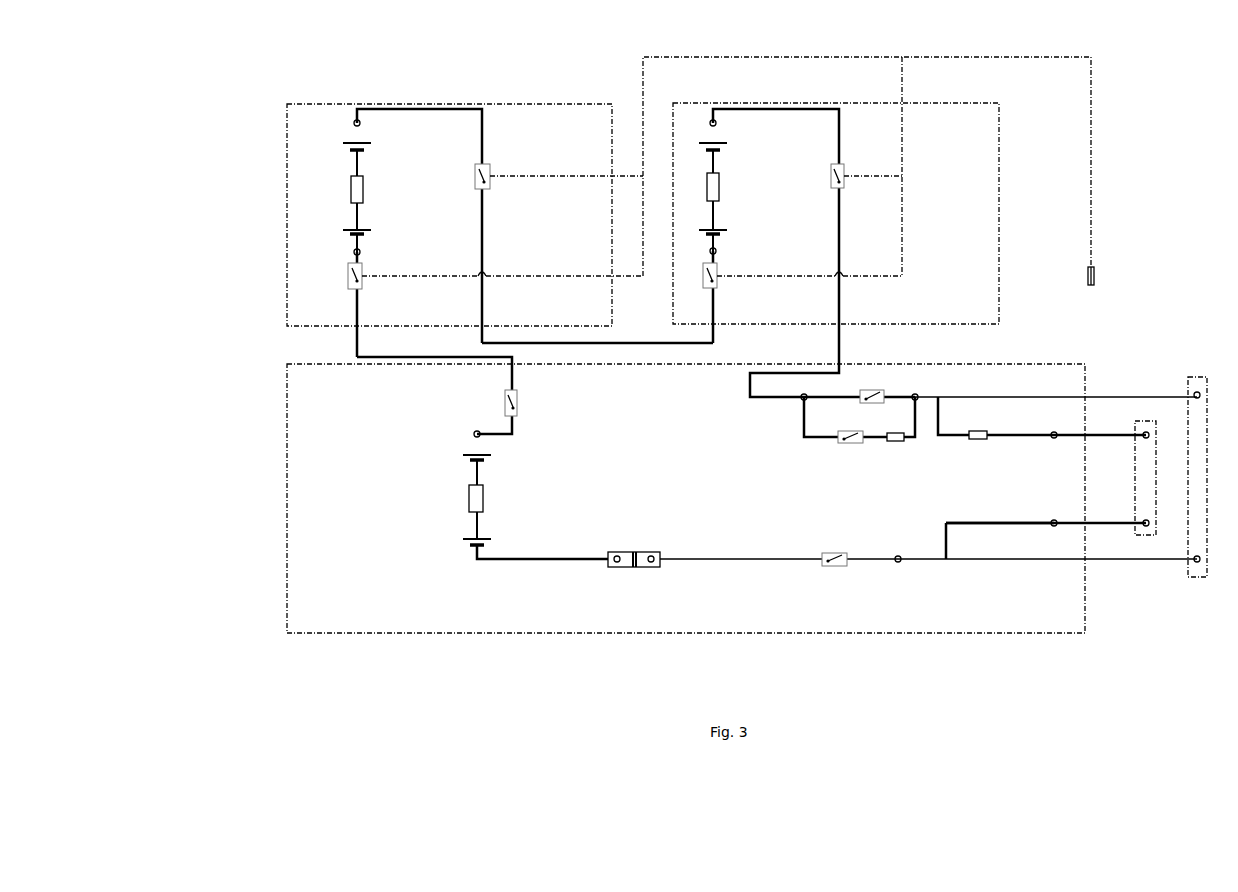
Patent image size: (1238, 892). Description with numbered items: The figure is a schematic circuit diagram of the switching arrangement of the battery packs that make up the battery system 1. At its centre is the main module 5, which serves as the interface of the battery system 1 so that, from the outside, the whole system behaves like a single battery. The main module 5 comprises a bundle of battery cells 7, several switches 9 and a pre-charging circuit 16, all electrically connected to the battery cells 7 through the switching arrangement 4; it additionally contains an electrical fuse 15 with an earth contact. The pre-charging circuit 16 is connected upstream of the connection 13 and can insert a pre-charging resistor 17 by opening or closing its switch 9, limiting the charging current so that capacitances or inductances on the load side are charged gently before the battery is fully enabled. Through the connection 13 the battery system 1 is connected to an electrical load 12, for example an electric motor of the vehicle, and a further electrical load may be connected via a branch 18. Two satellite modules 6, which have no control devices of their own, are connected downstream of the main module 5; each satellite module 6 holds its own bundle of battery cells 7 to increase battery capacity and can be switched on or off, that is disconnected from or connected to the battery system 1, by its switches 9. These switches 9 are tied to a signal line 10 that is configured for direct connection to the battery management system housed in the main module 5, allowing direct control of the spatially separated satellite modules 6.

The battery system 1 is at (1208, 470).
The switching arrangement 4 is at (618, 345).
The main module 5 is at (287, 540).
The satellite module 6 is at (287, 262).
The battery cells 7 is at (367, 155).
The switch 9 is at (475, 180).
The signal line 10 is at (643, 102).
The electrical load 12 is at (1136, 477).
The connection 13 is at (1122, 535).
The electrical fuse 15 is at (620, 583).
The pre-charging circuit 16 is at (801, 401).
The pre-charging resistor 17 is at (893, 442).
The branch 18 is at (955, 437).